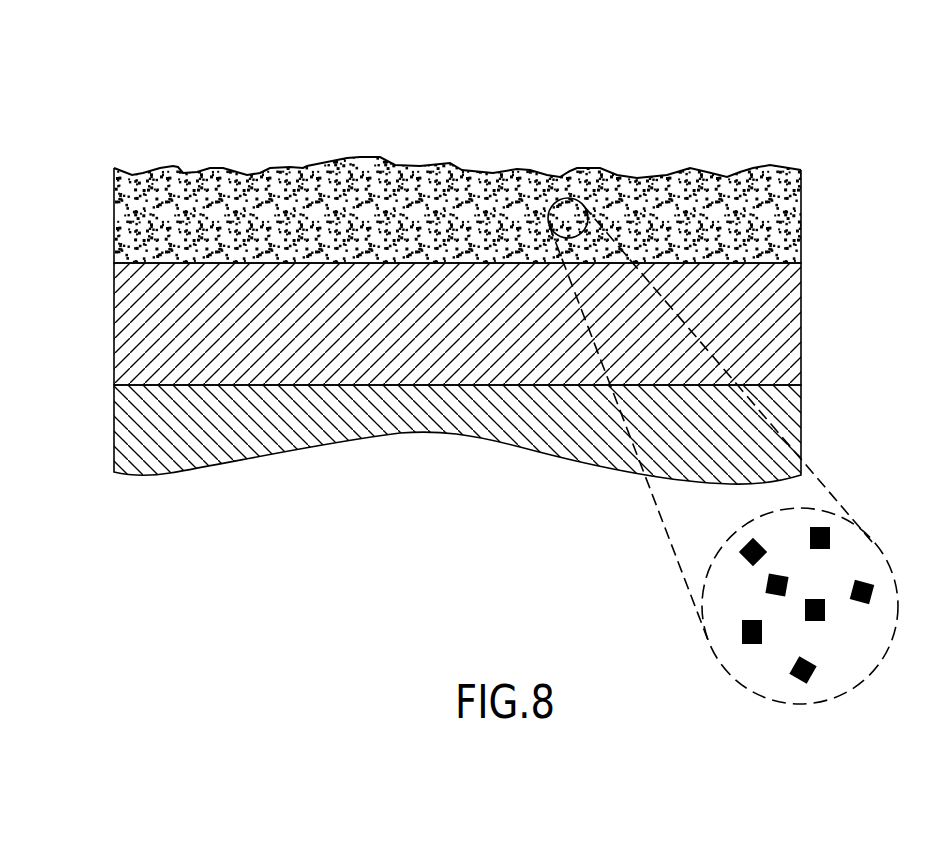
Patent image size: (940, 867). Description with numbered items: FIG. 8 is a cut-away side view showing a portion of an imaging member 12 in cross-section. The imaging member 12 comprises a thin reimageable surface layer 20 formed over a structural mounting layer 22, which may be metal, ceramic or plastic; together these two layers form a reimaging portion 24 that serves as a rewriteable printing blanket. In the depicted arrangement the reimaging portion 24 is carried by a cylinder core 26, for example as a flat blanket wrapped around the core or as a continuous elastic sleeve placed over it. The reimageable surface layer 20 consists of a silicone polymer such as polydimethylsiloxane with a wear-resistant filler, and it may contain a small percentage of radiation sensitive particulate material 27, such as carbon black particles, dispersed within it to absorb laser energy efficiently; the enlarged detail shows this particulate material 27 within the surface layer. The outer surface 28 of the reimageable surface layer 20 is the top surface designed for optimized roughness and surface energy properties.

The imaging member 12 is at (132, 87).
The reimageable surface layer 20 is at (787, 202).
The structural mounting layer 22 is at (785, 315).
The reimaging portion 24 is at (91, 170).
The cylinder core 26 is at (783, 425).
The radiation sensitive particulate material 27 is at (868, 590).
The outer surface 28 is at (583, 168).